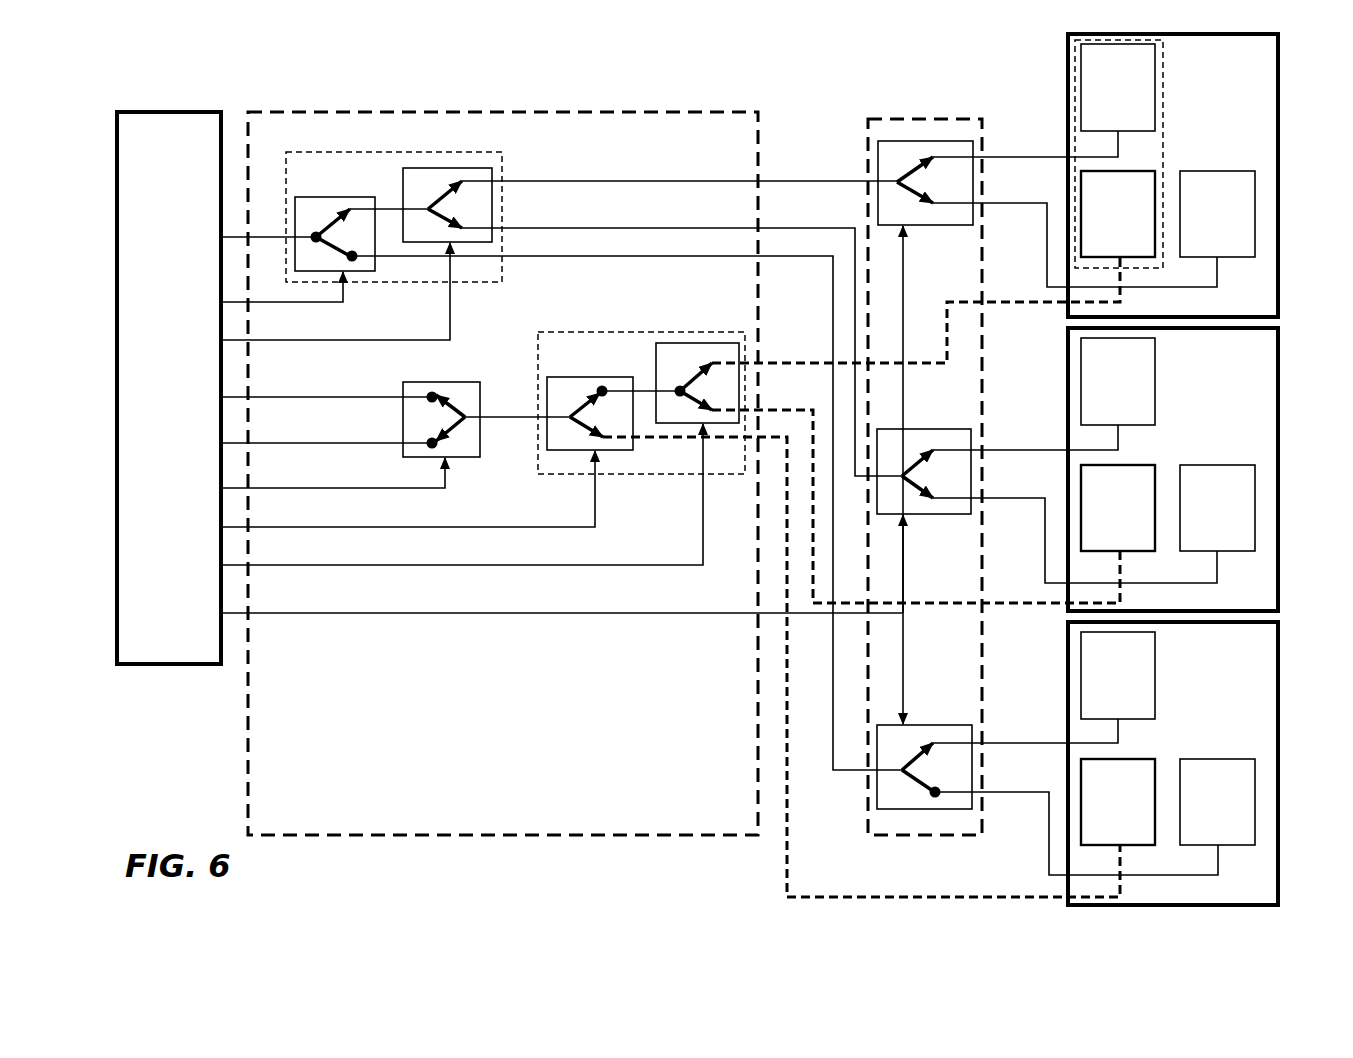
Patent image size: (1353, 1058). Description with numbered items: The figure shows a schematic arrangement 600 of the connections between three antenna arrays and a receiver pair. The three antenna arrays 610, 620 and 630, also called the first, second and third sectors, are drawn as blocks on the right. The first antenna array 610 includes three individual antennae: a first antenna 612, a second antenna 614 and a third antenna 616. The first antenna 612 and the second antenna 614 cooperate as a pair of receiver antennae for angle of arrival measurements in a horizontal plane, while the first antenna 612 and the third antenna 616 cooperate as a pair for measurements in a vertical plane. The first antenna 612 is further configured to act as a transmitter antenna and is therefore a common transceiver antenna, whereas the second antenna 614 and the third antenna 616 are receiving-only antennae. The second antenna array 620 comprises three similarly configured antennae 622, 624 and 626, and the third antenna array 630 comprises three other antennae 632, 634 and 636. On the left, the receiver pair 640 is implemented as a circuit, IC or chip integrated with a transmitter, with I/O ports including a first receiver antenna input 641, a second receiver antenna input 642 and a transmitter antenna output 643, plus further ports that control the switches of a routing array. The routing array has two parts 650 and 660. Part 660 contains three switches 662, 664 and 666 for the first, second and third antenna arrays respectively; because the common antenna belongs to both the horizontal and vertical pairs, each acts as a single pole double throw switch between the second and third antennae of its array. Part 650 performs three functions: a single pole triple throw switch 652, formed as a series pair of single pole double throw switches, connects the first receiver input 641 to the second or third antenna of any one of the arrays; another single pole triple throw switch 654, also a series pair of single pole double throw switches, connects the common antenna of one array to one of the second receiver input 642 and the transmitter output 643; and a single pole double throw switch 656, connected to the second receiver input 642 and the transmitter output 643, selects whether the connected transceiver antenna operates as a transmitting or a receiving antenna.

The schematic arrangement 600 is at (133, 67).
The first antenna array 610 is at (1208, 763).
The ANT1 antenna 612 is at (1155, 759).
The ANT2 antenna 614 is at (1255, 824).
The ANT3 antenna 616 is at (1155, 685).
The second antenna array 620 is at (1208, 469).
The antenna 622 is at (1155, 465).
The antenna 624 is at (1255, 530).
The antenna 626 is at (1155, 391).
The third antenna array 630 is at (1208, 175).
The antenna 632 is at (1155, 171).
The antenna 634 is at (1255, 236).
The antenna 636 is at (1155, 97).
The receiver pair 640 is at (169, 388).
The receiver antenna input Rx1 641 is at (229, 237).
The receiver antenna input Rx2 642 is at (287, 397).
The transmitter antenna output Tx 643 is at (294, 444).
The routing array part 650 is at (503, 473).
The single pole triple throw switch 652 is at (500, 160).
The single pole triple throw switch 654 is at (585, 332).
The single pole double throw switch 656 is at (470, 382).
The routing array part 660 is at (868, 808).
The switch 662 is at (923, 725).
The switch 664 is at (920, 429).
The switch 666 is at (922, 143).